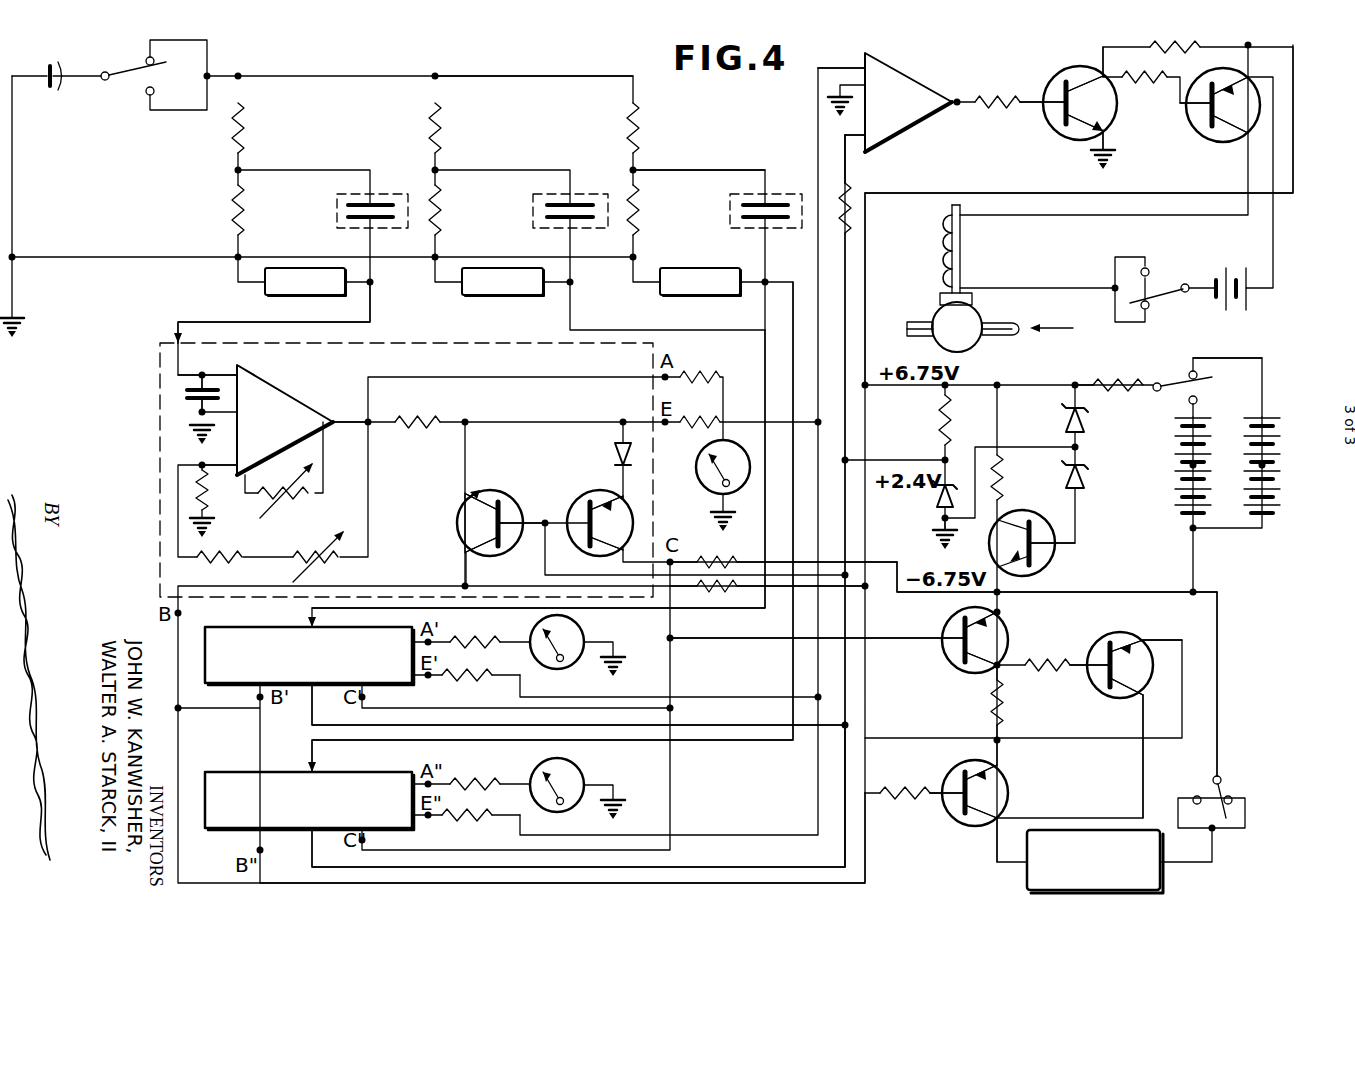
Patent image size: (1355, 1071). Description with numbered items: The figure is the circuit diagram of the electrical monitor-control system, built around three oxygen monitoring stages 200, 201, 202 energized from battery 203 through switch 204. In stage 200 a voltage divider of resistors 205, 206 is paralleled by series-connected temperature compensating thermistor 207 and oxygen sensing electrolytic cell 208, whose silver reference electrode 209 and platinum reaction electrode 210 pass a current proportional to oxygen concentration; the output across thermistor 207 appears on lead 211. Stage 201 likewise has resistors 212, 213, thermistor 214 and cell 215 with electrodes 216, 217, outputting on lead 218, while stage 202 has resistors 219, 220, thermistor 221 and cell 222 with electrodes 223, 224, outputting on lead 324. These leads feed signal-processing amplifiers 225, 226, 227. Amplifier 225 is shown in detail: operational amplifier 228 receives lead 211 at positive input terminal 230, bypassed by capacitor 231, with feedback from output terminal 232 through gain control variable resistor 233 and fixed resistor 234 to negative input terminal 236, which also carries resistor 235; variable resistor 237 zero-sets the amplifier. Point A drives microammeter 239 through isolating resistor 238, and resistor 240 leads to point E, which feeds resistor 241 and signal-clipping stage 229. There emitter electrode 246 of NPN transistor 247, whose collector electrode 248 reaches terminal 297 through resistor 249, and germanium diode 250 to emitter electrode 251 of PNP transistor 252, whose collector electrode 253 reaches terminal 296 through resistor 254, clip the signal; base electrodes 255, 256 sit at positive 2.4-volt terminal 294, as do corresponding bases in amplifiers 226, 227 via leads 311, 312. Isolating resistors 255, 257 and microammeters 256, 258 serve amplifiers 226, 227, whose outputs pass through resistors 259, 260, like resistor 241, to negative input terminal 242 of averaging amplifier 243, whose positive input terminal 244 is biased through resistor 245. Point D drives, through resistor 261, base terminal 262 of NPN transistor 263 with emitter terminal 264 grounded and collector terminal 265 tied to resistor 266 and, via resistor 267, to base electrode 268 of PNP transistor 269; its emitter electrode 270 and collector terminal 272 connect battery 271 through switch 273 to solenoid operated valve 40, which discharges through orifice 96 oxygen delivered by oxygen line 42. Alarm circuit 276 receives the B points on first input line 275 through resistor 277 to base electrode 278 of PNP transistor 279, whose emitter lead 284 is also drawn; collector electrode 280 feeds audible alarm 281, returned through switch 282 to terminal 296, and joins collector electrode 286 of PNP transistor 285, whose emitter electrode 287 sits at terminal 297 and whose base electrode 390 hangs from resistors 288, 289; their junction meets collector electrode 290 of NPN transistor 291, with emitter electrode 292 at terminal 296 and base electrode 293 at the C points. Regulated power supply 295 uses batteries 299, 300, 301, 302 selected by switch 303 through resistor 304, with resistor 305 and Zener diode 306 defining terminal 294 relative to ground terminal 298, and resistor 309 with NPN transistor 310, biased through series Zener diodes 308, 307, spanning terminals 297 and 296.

The first oxygen monitoring stage 200 is at (290, 68).
The second oxygen monitoring stage 201 is at (512, 68).
The third oxygen monitoring stage 202 is at (702, 158).
The battery 203 is at (64, 90).
The single-pole double-throw switch 204 is at (126, 90).
The resistor 205 is at (233, 132).
The resistor 206 is at (233, 202).
The temperature compensating thermistor 207 is at (299, 293).
The oxygen sensing electrolytic cell 208 is at (327, 200).
The reference electrode 209 is at (375, 198).
The reaction electrode 210 is at (349, 222).
The lead 211 is at (192, 328).
The resistor 212 is at (429, 112).
The resistor 213 is at (442, 207).
The thermistor 214 is at (492, 293).
The oxygen sensing cell 215 is at (523, 203).
The silver reference electrode 216 is at (580, 197).
The platinum reaction electrode 217 is at (546, 222).
The lead 218 is at (763, 350).
The resistor 219 is at (630, 114).
The resistor 220 is at (643, 204).
The thermistor 221 is at (692, 293).
The oxygen sensing cell 222 is at (718, 220).
The silver reference electrode 223 is at (768, 194).
The platinum reaction electrode 224 is at (748, 228).
The signal-processing amplifier 225 is at (184, 390).
The signal-processing amplifier 226 is at (309, 656).
The signal-processing amplifier 227 is at (309, 801).
The directly coupled linear operational amplifier 228 is at (290, 385).
The signal-clipping stage 229 is at (531, 478).
The positive input terminal 230 is at (227, 374).
The capacitor 231 is at (187, 405).
The amplifier output terminal 232 is at (341, 415).
The gain control variable resistor 233 is at (332, 561).
The fixed resistor 234 is at (228, 557).
The resistor 235 is at (189, 492).
The negative input terminal 236 is at (216, 464).
The variable resistor 237 is at (301, 493).
The isolating resistor 238 is at (711, 383).
The microammeter 239 is at (702, 485).
The resistor 240 is at (413, 411).
The resistor 241 is at (692, 432).
The negative input terminal 242 is at (830, 62).
The directly coupled averaging amplifier 243 is at (908, 60).
The positive input terminal 244 is at (868, 153).
The resistor 245 is at (854, 187).
The emitter electrode 246 is at (485, 499).
The NPN transistor 247 is at (440, 508).
The collector electrode 248 is at (458, 530).
The resistor 249 is at (724, 600).
The germanium diode 250 is at (610, 452).
The emitter electrode 251 is at (624, 506).
The PNP transistor 252 is at (606, 492).
The collector electrode 253 is at (641, 527).
The resistor 254 is at (716, 562).
The base electrode 255 is at (562, 523).
The base electrode 256 is at (510, 554).
The isolating resistor 257 is at (456, 784).
The microammeter 258 is at (556, 781).
The resistor 259 is at (480, 675).
The resistor 260 is at (480, 815).
The resistor 261 is at (988, 94).
The base terminal 262 is at (1050, 82).
The NPN transistor 263 is at (1036, 124).
The emitter terminal 264 is at (1075, 132).
The collector terminal 265 is at (1093, 78).
The resistor 266 is at (1173, 50).
The resistor 267 is at (1150, 91).
The base electrode 268 is at (1198, 126).
The PNP transistor 269 is at (1202, 146).
The emitter electrode 270 is at (1224, 78).
The battery 271 is at (1236, 268).
The collector terminal 272 is at (1228, 138).
The single-pole double-throw switch 273 is at (1171, 284).
The first input line 275 is at (866, 868).
The alarm circuit 276 is at (1228, 728).
The resistor 277 is at (901, 804).
The base electrode 278 is at (950, 822).
The PNP transistor 279 is at (942, 772).
The collector electrode 280 is at (986, 826).
The audible alarm 281 is at (1026, 880).
The single-pole double-throw switch 282 is at (1227, 790).
The emitter 284 is at (1000, 781).
The PNP transistor 285 is at (1163, 665).
The collector electrode 286 is at (1113, 697).
The emitter electrode 287 is at (1136, 640).
The resistor 288 is at (986, 704).
The resistor 289 is at (1040, 662).
The collector electrode 290 is at (983, 667).
The NPN transistor 291 is at (1015, 636).
The emitter electrode 292 is at (1003, 628).
The base electrode 293 is at (946, 654).
The positive 2.4-volt terminal 294 is at (900, 460).
The regulated power supply 295 is at (1208, 354).
The negative 6.75-volt terminal 296 is at (931, 596).
The positive 6.75-volt terminal 297 is at (1012, 192).
The ground terminal 298 is at (936, 538).
The battery 299 is at (1248, 450).
The battery 300 is at (1279, 520).
The battery 301 is at (1177, 448).
The battery 302 is at (1175, 496).
The single-pole double-throw switch 303 is at (1180, 379).
The resistor 304 is at (1122, 384).
The resistor 305 is at (938, 410).
The Zener diode 306 is at (938, 505).
The zener diode 307 is at (1086, 425).
The Zener diode 308 is at (1081, 498).
The resistor 309 is at (1004, 489).
The NPN transistor 310 is at (1058, 560).
The lead 311 is at (306, 715).
The lead 312 is at (306, 848).
The lead 324 is at (780, 280).
The base electrode 390 is at (1092, 680).
The solenoid operated valve 40 is at (962, 253).
The oxygen line 42 is at (996, 326).
The orifice 96 is at (918, 322).